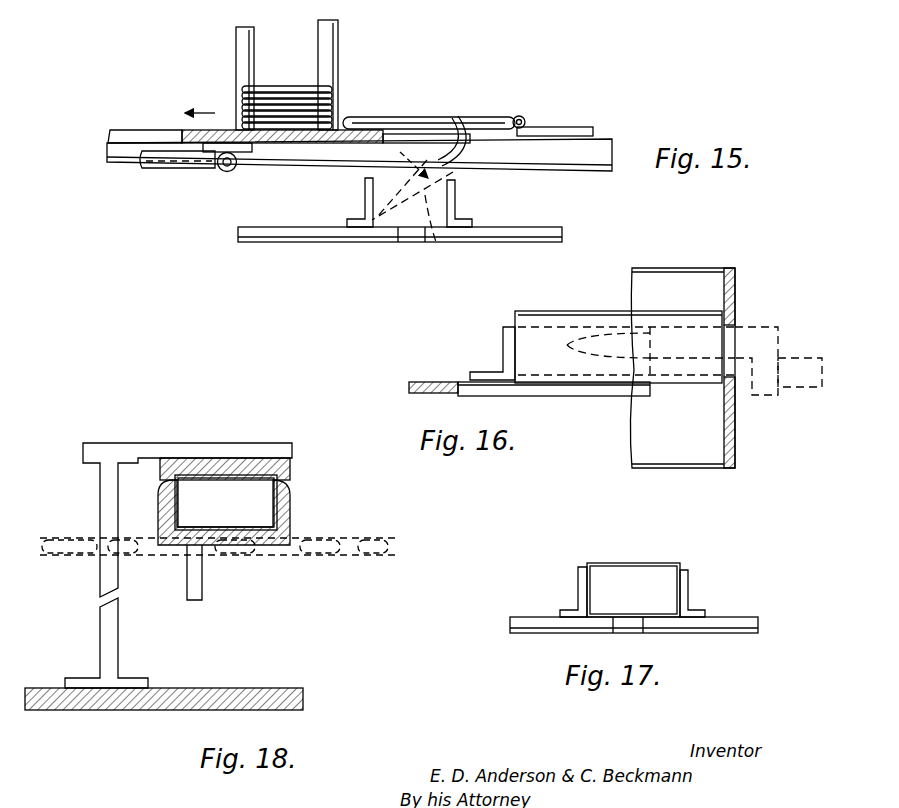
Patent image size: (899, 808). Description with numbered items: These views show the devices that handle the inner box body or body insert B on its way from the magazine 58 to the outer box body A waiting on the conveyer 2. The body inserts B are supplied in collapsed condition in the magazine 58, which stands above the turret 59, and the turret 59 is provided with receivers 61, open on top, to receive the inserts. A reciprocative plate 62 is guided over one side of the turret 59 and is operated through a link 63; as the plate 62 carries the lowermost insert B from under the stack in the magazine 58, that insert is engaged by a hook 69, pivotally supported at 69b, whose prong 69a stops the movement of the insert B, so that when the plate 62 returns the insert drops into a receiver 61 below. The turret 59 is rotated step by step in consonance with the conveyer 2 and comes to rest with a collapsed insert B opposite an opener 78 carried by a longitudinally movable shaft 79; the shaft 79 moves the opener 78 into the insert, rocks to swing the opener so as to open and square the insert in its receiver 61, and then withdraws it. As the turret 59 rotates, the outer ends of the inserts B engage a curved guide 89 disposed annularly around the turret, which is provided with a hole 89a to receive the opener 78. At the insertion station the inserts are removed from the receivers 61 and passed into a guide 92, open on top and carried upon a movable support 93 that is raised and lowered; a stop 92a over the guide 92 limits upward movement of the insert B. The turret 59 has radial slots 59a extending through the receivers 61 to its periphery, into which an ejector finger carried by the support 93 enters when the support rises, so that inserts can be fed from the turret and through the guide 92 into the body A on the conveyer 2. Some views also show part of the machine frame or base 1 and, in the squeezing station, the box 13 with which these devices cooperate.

In FIG. 15, the machine frame / table 1 is at (597, 167).
In FIG. 18, the machine frame / table 1 is at (258, 700).
In FIG. 18, the conveyer 2 is at (386, 540).
In FIG. 15, the article (box blank) 13 is at (282, 93).
In FIG. 15, the magazine 58 is at (338, 62).
In FIG. 15, the turret 59 is at (328, 235).
In FIG. 16, the turret 59 is at (435, 372).
In FIG. 17, the turret 59 is at (545, 633).
In FIG. 15, the radial slots 59a is at (412, 238).
In FIG. 16, the radial slots 59a is at (570, 390).
In FIG. 17, the radial slots 59a is at (630, 634).
In FIG. 15, the receivers 61 is at (455, 205).
In FIG. 16, the receivers 61 is at (503, 355).
In FIG. 17, the receivers 61 is at (688, 585).
In FIG. 15, the reciprocative plate 62 is at (190, 130).
In FIG. 15, the link 63 is at (187, 164).
In FIG. 15, the hook 69 is at (408, 118).
In FIG. 15, the prong 69a is at (457, 145).
In FIG. 15, the pivot of hook 69b is at (526, 118).
In FIG. 16, the opener 78 is at (770, 326).
In FIG. 16, the longitudinally movable shaft 79 is at (802, 357).
In FIG. 16, the curved guide 89 is at (738, 444).
In FIG. 16, the hole 89a is at (735, 325).
In FIG. 18, the guide 92 is at (290, 500).
In FIG. 18, the stop 92a is at (250, 462).
In FIG. 18, the movable support 93 is at (203, 582).
In FIG. 16, the box body A is at (575, 320).
In FIG. 18, the body insert B is at (268, 509).
In FIG. 17, the body insert B is at (642, 562).